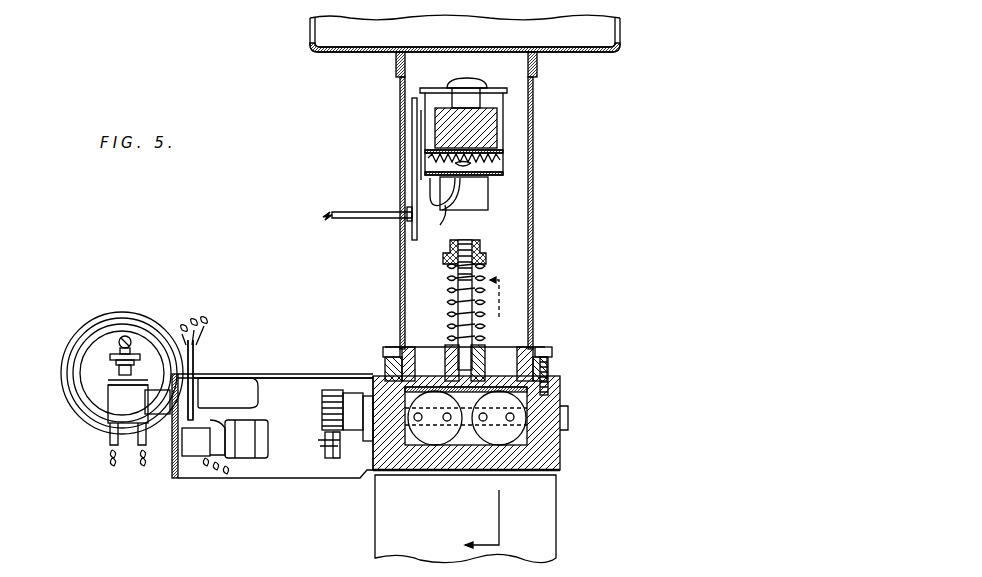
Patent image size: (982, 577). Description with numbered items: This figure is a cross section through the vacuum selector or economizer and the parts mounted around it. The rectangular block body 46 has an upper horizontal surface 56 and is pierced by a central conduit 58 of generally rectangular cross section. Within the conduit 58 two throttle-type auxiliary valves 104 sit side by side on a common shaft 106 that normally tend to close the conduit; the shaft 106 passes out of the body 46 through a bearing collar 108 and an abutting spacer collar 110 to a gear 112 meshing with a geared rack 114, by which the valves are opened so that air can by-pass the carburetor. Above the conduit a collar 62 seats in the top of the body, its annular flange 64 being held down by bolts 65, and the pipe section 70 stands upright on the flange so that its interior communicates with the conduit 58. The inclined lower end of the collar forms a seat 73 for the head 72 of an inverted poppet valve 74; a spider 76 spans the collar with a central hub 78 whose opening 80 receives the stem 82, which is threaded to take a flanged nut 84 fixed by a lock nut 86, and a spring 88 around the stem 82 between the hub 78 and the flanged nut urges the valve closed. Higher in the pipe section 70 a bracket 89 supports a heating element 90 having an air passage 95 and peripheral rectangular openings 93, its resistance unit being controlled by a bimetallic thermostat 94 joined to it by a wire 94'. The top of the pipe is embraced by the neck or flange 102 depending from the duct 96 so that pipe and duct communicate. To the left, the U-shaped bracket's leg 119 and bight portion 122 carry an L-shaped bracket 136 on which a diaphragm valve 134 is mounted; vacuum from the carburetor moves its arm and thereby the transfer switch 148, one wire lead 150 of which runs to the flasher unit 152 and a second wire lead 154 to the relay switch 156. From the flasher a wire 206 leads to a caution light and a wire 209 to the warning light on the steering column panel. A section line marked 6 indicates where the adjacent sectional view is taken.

The duct 96 is at (620, 40).
The neck or flange 102 is at (536, 76).
The pipe section 70 is at (533, 250).
The heating element 90 is at (515, 147).
The air passage 95 is at (500, 118).
The rectangular openings 93 is at (490, 165).
The bracket 89 is at (495, 182).
The bimetallic thermostat 94 is at (372, 169).
The wire 94' is at (434, 222).
The lock nut 86 is at (452, 253).
The flanged nut 84 is at (487, 252).
The spring 88 is at (448, 292).
The inverted poppet valve 74 is at (440, 280).
The section line 6 is at (480, 405).
The stem 82 is at (458, 324).
The opening 80 is at (470, 342).
The collar 62 is at (405, 346).
The spider 76 is at (530, 348).
The hub 78 is at (448, 347).
The valve head 72 is at (490, 368).
The bolts 65 is at (386, 349).
The annular flange 64 is at (551, 362).
The upper horizontal surface 56 is at (548, 372).
The seat 73 is at (413, 389).
The auxiliary valves 104 is at (440, 445).
The central conduit 58 is at (525, 440).
The shaft 106 is at (560, 410).
The body 46 is at (556, 462).
The bight portion 122 is at (172, 479).
The leg 119 is at (280, 377).
The relay switch 156 is at (224, 385).
The flasher unit 152 is at (260, 452).
The gear 112 is at (330, 390).
The spacer collar 110 is at (348, 393).
The bearing collar 108 is at (369, 395).
The geared rack 114 is at (325, 438).
The diaphragm valve 134 is at (75, 342).
The L-shaped bracket 136 is at (157, 378).
The transfer switch 148 is at (106, 426).
The wire lead 150 is at (108, 462).
The second wire lead 154 is at (148, 462).
The wire 206 is at (222, 462).
The wire 209 is at (232, 470).